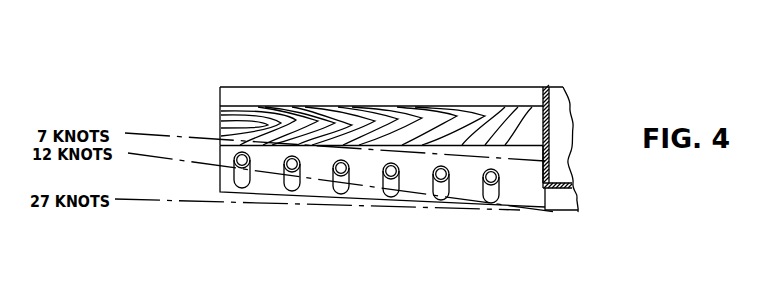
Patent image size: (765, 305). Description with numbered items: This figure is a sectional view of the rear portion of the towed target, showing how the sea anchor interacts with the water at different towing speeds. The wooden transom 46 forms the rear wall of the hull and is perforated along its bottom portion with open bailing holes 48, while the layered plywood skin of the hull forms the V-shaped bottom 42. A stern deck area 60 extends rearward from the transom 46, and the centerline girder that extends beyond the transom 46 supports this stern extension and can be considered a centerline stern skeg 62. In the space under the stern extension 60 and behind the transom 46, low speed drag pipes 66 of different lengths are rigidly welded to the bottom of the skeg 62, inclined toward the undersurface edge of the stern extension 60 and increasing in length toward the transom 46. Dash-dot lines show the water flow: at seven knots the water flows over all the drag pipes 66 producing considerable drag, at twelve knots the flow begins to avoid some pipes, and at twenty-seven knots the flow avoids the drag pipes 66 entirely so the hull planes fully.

The stern deck area 60 is at (262, 96).
The centerline stern skeg 62 is at (320, 188).
The low speed drag pipes 66 is at (487, 190).
The transom 46 is at (553, 123).
The bailing holes 48 is at (548, 172).
The V-shaped bottom 42 is at (570, 199).